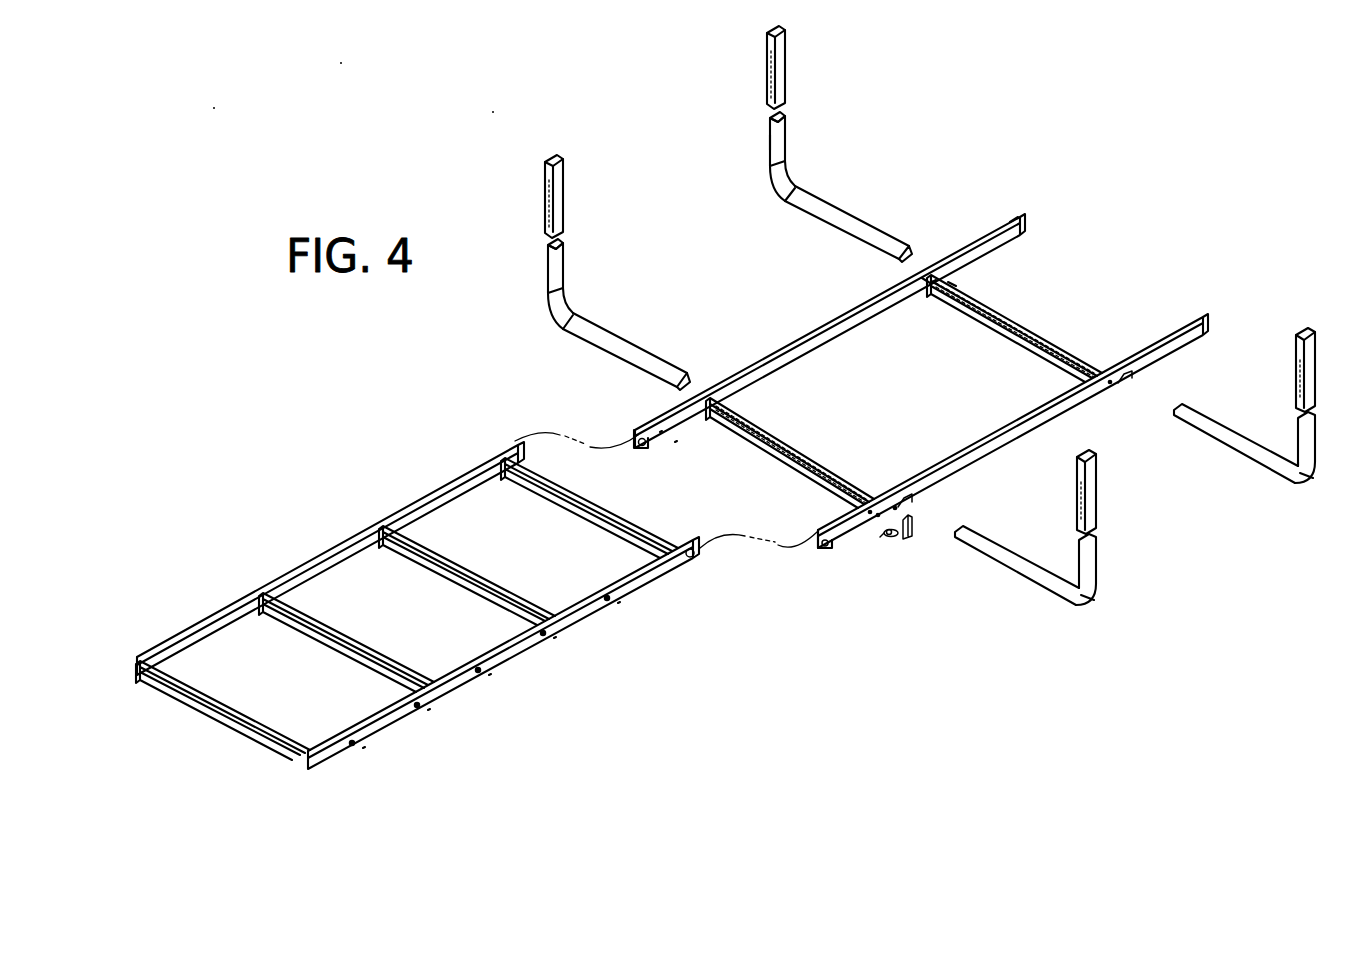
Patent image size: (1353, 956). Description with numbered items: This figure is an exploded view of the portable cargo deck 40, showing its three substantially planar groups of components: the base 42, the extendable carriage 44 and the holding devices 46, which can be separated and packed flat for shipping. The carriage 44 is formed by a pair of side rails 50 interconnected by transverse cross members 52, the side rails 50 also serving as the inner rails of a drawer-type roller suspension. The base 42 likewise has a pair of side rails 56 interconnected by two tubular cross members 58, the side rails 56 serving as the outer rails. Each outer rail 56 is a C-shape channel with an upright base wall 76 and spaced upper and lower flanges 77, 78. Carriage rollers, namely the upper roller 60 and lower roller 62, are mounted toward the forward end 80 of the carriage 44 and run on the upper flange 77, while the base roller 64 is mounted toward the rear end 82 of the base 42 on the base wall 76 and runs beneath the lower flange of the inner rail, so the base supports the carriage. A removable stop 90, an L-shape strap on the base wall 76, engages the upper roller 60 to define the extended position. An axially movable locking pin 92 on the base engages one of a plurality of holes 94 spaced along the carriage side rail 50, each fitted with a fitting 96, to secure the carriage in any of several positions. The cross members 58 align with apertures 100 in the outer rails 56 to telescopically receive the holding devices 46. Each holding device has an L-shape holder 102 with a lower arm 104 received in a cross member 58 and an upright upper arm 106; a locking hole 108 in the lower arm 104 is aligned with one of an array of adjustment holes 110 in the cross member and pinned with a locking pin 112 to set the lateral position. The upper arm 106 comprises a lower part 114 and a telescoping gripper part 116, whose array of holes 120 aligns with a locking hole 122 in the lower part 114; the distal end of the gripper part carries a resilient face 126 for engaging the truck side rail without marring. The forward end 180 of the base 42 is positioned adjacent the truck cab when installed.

The portable cargo deck 40 is at (918, 134).
The base 42 is at (1107, 300).
The extendable carriage 44 is at (199, 745).
The holding device 46 is at (573, 291).
The side rail of carriage 50 is at (340, 558).
The cross member of carriage 52 is at (560, 490).
The side rail of base 56 is at (836, 336).
The cross member of base 58 is at (780, 428).
The upper roller 60 is at (696, 550).
The lower roller 62 is at (699, 554).
The base roller 64 is at (638, 446).
The base wall of outer rail 76 is at (676, 440).
The upper flange of outer rail 77 is at (658, 430).
The lower flange of outer rail 78 is at (655, 450).
The forward end of carriage 80 is at (510, 431).
The rear end of base 82 is at (598, 421).
The removable stop 90 is at (913, 527).
The locking pin 92 is at (890, 541).
The hole 94 is at (606, 604).
The fitting 96 is at (609, 600).
The aperture 100 is at (1124, 374).
The L-shape holder 102 is at (640, 343).
The lower arm 104 is at (790, 204).
The upright upper arm 106 is at (768, 142).
The locking hole 108 is at (686, 368).
The adjustment hole 110 is at (962, 292).
The locking pin 112 is at (918, 279).
The lower part of upright arm 114 is at (546, 283).
The gripper part 116 is at (564, 197).
The hole of gripper part 120 is at (545, 204).
The locking hole of lower part 122 is at (546, 249).
The resilient face 126 is at (562, 158).
The forward end of base 180 is at (996, 213).